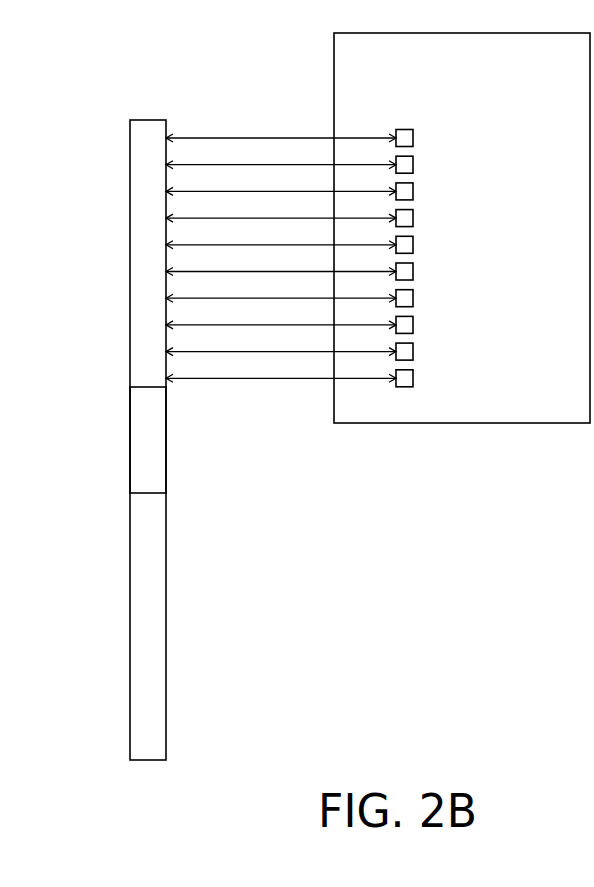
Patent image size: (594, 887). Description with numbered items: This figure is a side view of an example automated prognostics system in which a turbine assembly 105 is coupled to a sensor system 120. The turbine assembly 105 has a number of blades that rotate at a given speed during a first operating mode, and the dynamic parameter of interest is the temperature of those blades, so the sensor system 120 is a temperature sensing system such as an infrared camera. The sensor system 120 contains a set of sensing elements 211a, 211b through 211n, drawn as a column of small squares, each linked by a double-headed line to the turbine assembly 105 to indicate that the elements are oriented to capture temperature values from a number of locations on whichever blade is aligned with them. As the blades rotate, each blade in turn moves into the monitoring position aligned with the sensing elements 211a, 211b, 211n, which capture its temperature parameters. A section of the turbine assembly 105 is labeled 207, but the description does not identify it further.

The turbine assembly 105 is at (145, 88).
The vehicle section 207 is at (130, 446).
The sensor system 120 is at (462, 228).
The sensing element 211a is at (414, 137).
The sensing element 211b is at (413, 166).
The sensing element 211n is at (416, 380).